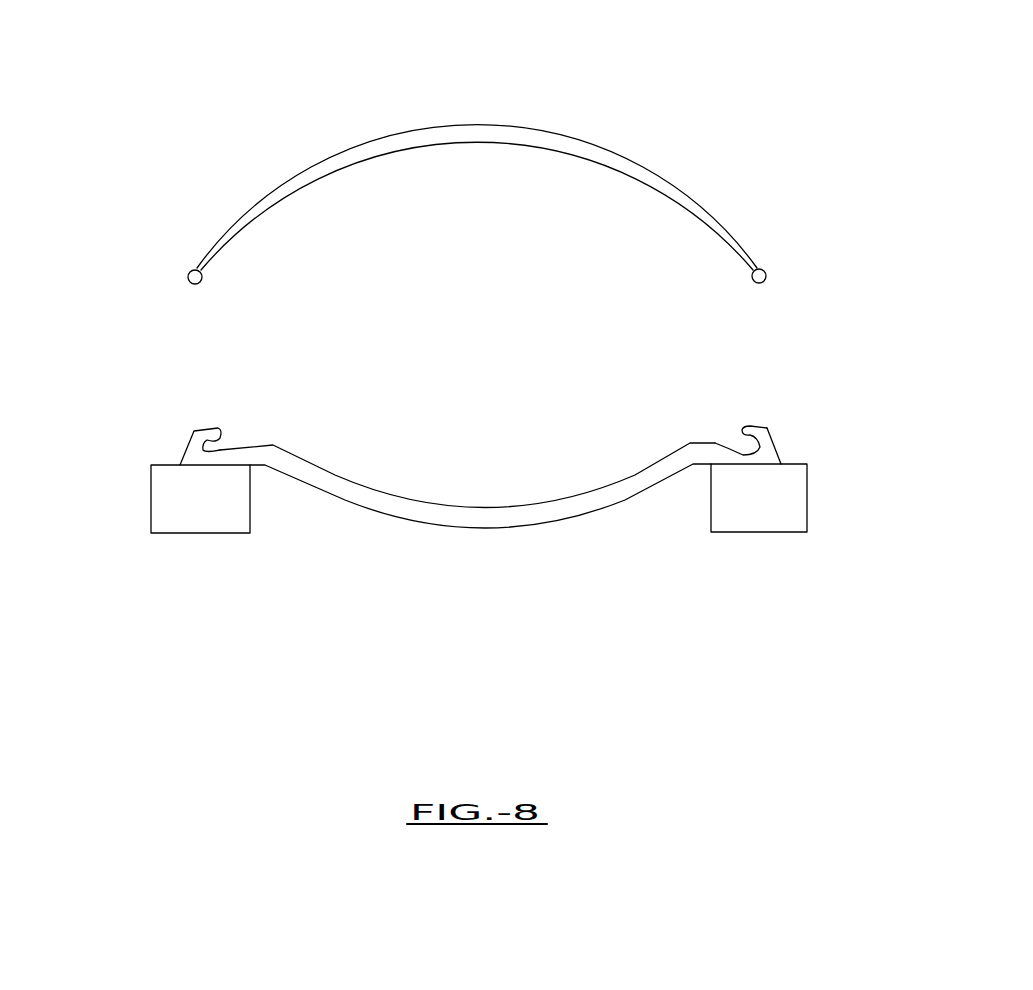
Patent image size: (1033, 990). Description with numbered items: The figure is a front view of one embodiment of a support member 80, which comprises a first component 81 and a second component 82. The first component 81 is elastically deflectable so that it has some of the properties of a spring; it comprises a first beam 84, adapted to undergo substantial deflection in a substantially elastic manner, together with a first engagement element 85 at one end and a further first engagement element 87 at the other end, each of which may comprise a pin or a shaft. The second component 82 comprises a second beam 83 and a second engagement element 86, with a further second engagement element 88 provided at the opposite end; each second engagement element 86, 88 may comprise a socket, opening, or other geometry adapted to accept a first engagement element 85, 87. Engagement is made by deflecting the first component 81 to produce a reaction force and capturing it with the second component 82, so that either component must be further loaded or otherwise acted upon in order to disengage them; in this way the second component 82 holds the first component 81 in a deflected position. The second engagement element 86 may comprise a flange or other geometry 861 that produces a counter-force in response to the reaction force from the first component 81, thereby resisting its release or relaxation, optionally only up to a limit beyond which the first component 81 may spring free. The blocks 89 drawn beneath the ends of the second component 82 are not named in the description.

The support member 80 is at (173, 333).
The first component 81 is at (580, 122).
The first beam 84 is at (375, 147).
The first engagement element 87 is at (194, 268).
The first engagement element 85 is at (765, 268).
The second component 82 is at (612, 520).
The second beam 83 is at (369, 496).
The second engagement element 88 is at (180, 438).
The second engagement element 86 is at (783, 442).
The flange or other geometry 861 is at (755, 420).
The support block 89 is at (145, 517).